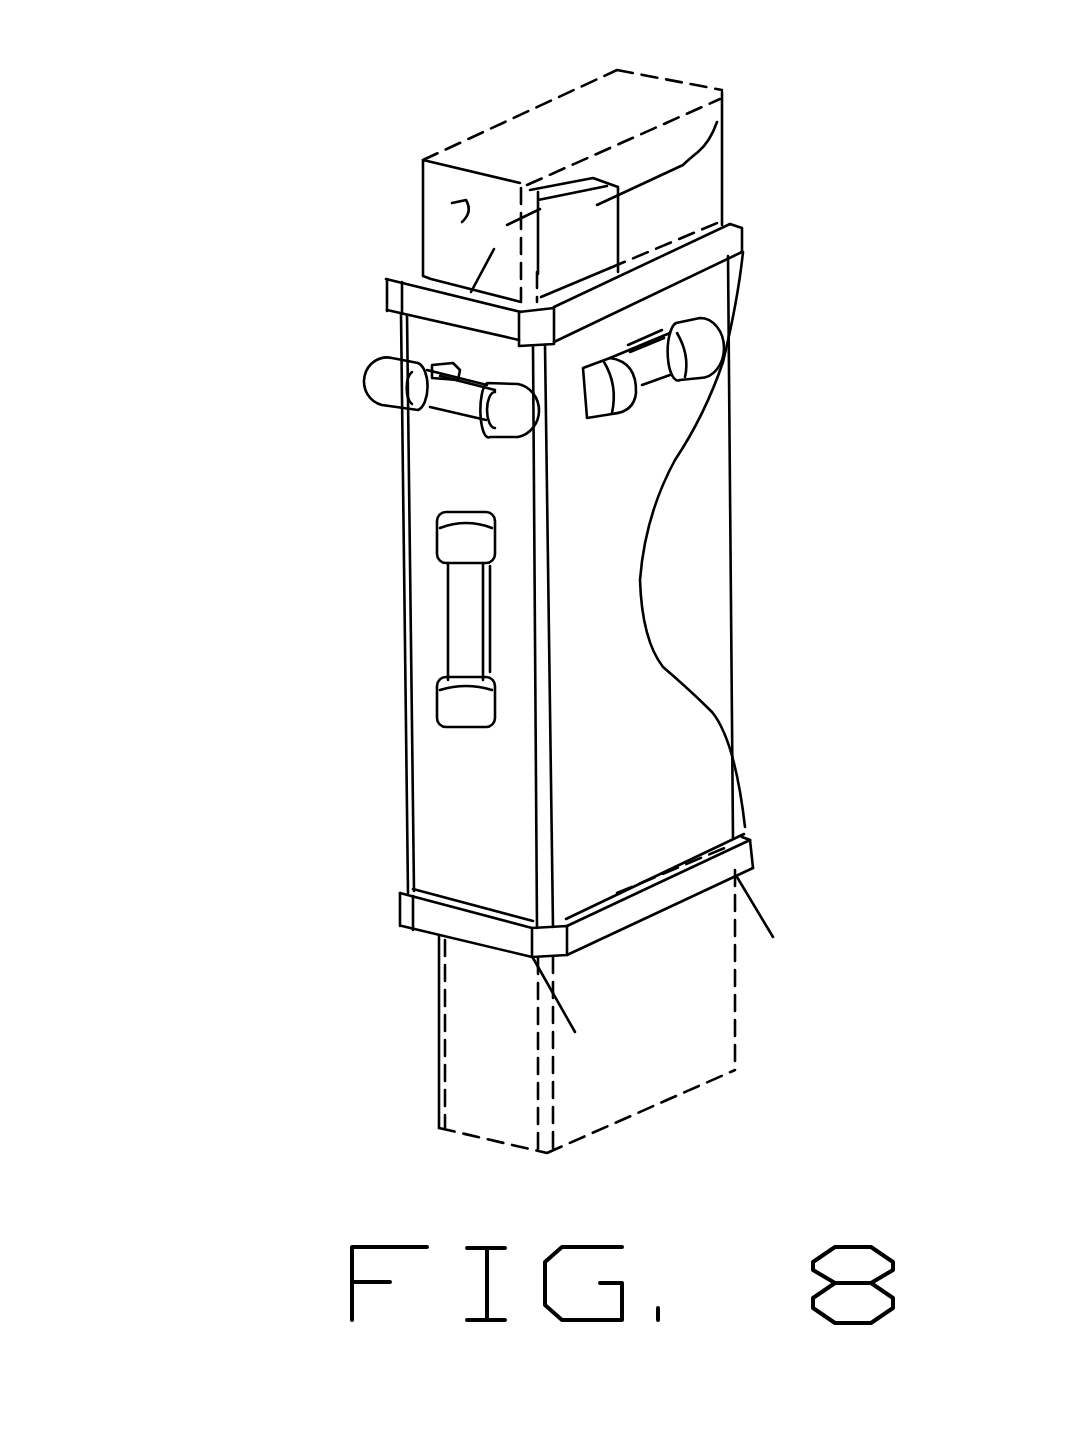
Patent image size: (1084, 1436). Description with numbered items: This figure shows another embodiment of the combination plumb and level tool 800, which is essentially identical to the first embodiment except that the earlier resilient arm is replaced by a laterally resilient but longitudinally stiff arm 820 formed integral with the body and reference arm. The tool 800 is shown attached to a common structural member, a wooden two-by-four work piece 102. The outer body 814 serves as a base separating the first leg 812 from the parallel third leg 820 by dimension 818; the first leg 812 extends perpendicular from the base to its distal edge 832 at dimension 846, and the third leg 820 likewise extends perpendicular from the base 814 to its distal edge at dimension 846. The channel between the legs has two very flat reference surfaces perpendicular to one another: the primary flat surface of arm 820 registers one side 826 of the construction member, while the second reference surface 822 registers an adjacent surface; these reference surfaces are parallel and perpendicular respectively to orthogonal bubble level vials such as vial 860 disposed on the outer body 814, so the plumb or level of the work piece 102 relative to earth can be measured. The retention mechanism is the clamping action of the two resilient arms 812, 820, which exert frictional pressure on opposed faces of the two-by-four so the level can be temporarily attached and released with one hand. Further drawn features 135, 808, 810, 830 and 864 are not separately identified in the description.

The work piece 102 is at (618, 91).
The latch 135 is at (470, 262).
The tool 800 is at (212, 475).
The upper frame flange 808 is at (386, 279).
The lower frame flange 810 is at (406, 931).
The first leg 812 is at (448, 414).
The outer body 814 is at (498, 841).
The dimension 818 is at (702, 144).
The resilient arm 820 is at (656, 807).
The second reference surface 822 is at (494, 249).
The side of construction member 826 is at (680, 1036).
The tab 830 is at (690, 222).
The distal edge 832 is at (737, 262).
The dimension 846 is at (766, 940).
The bubble level vial 860 is at (447, 617).
The side fastener 864 is at (663, 382).